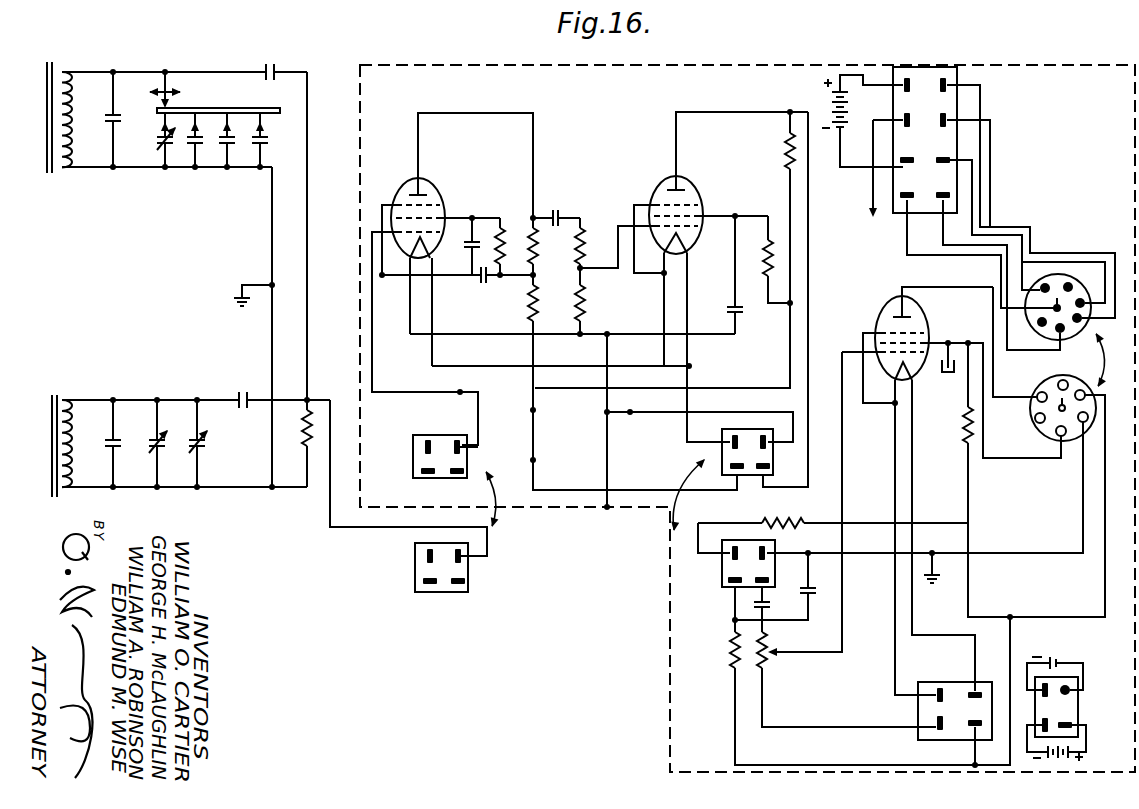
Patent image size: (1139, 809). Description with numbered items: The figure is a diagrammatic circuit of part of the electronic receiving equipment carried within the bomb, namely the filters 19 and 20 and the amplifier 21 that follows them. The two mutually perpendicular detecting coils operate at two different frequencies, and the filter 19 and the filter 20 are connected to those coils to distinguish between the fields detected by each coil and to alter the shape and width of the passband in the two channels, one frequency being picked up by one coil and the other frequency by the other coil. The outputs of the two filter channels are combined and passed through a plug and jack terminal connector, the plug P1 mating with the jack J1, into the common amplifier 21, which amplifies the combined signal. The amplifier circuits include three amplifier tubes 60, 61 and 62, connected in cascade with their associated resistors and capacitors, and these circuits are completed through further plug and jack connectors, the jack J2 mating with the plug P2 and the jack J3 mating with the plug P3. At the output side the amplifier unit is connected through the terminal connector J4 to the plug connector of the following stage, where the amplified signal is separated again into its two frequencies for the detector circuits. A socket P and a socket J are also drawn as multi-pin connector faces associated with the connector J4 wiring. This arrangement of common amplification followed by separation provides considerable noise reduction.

The filter 19 is at (177, 263).
The filter 20 is at (191, 430).
The amplifier 21 is at (732, 407).
The amplifier tube 60 is at (443, 196).
The amplifier tube 61 is at (695, 188).
The amplifier tube 62 is at (929, 325).
The jack terminal connector J1 is at (455, 481).
The jack connector J2 is at (719, 480).
The jack connector J3 is at (955, 712).
The terminal connector J4 is at (955, 103).
The plug terminal connector P1 is at (416, 496).
The plug connector P2 is at (736, 568).
The plug connector P3 is at (1071, 709).
The plug socket P is at (1065, 331).
The jack socket J is at (1063, 398).